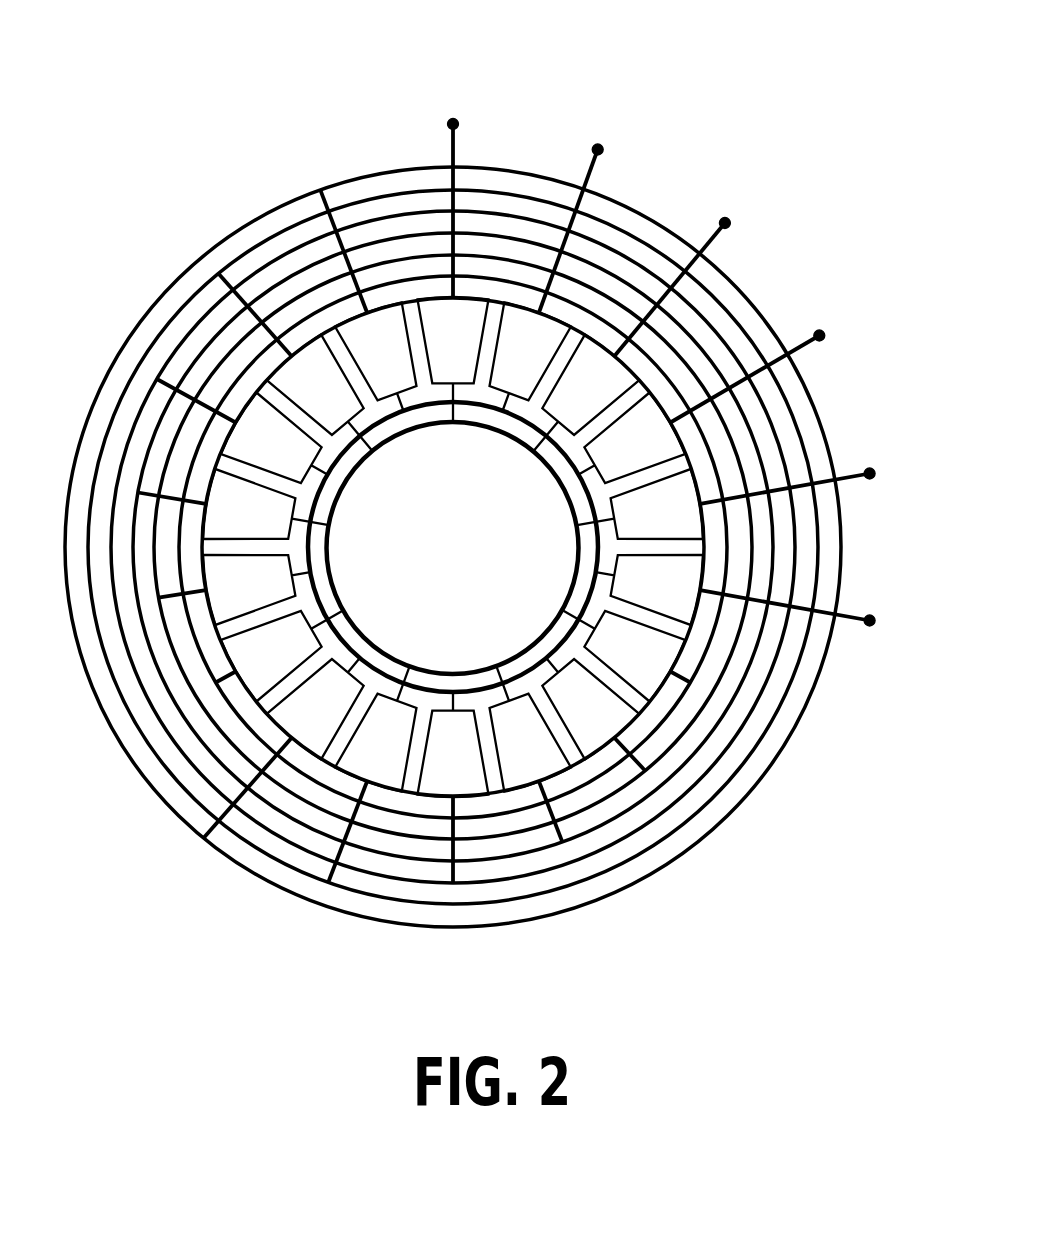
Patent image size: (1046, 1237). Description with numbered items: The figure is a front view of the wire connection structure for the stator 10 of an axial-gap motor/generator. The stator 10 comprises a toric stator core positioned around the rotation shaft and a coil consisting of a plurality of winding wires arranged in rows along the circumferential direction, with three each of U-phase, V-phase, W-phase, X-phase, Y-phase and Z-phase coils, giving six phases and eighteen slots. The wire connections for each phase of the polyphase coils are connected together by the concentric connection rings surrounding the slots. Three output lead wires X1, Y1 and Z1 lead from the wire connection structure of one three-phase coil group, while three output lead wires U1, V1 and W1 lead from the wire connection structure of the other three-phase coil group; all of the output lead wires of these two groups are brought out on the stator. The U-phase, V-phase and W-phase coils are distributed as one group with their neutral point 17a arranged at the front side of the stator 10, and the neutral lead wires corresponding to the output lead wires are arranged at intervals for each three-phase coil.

The stator 10 is at (496, 467).
The neutral point 17a is at (548, 462).
The output lead wire U1 is at (456, 123).
The output lead wire X1 is at (598, 149).
The output lead wire V1 is at (728, 225).
The output lead wire Y1 is at (818, 342).
The output lead wire W1 is at (870, 472).
The output lead wire Z1 is at (870, 624).